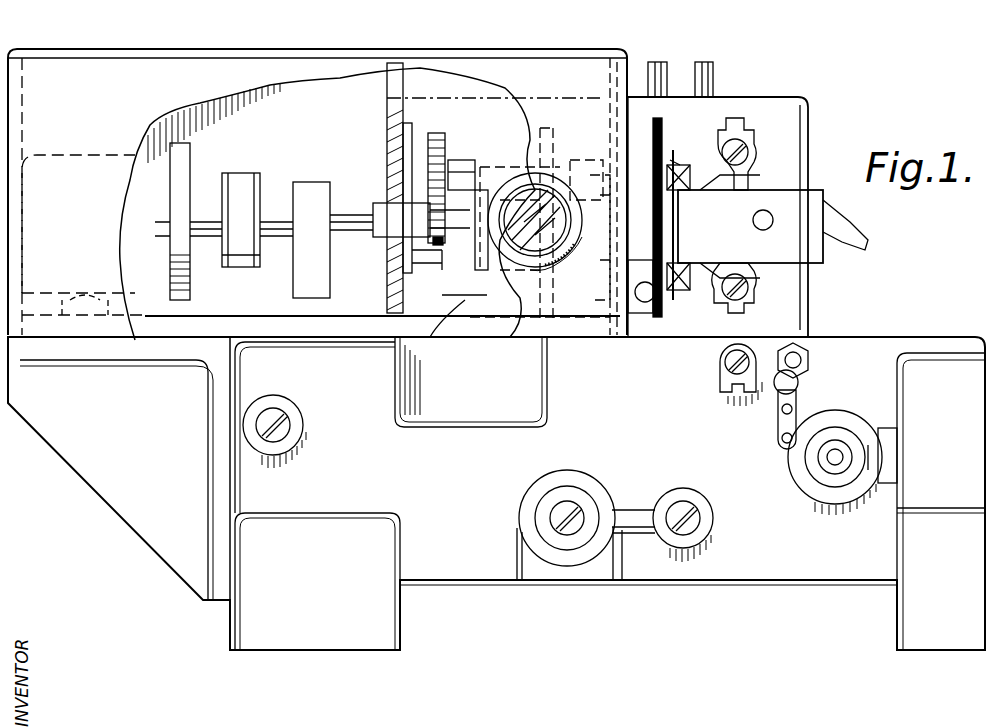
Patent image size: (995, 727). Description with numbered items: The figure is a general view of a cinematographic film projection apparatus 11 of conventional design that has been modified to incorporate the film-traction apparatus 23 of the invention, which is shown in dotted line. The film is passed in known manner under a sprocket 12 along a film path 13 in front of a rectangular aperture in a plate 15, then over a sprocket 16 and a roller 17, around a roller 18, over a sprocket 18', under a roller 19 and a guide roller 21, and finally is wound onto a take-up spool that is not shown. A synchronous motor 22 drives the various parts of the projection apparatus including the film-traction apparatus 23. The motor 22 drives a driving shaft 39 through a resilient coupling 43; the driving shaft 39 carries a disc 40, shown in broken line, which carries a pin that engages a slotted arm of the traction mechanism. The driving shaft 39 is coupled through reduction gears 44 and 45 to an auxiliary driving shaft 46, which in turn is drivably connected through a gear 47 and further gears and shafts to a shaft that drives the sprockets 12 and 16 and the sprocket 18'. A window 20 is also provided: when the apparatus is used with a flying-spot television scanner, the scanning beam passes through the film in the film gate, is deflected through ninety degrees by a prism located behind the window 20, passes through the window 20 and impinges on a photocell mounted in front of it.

The cinematographic film projection apparatus 11 is at (740, 106).
The sprocket 12 is at (760, 152).
The film path 13 is at (672, 165).
The plate 15 is at (663, 138).
The sprocket 16 is at (752, 296).
The roller 17 is at (800, 420).
The roller 18 is at (830, 465).
The sprocket 18' is at (712, 375).
The roller 19 is at (707, 525).
The window 20 is at (528, 296).
The guide roller 21 is at (305, 430).
The synchronous motor 22 is at (83, 235).
The film-traction apparatus 23 is at (592, 108).
The driving shaft 39 is at (345, 214).
The disc 40 is at (490, 272).
The resilient coupling 43 is at (238, 178).
The reduction gear 44 is at (437, 245).
The reduction gear 45 is at (436, 140).
The auxiliary driving shaft 46 is at (470, 162).
The gear 47 is at (548, 128).